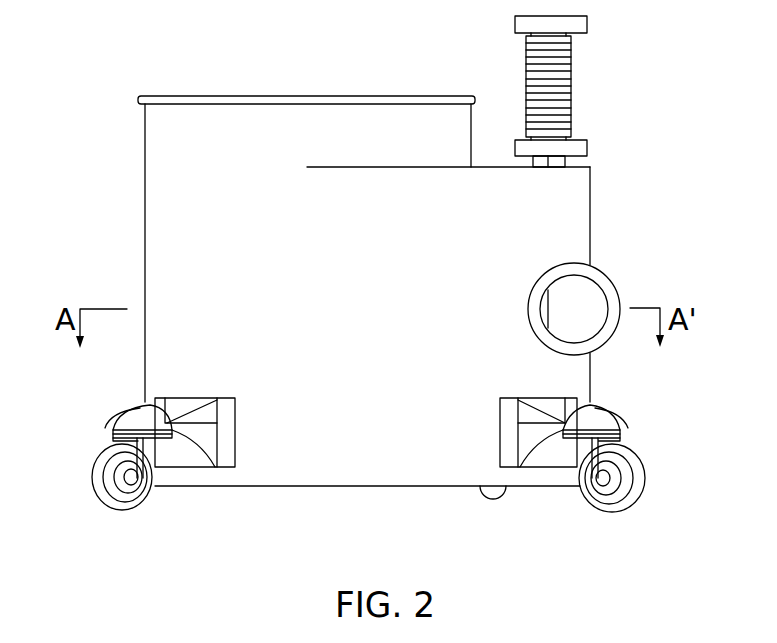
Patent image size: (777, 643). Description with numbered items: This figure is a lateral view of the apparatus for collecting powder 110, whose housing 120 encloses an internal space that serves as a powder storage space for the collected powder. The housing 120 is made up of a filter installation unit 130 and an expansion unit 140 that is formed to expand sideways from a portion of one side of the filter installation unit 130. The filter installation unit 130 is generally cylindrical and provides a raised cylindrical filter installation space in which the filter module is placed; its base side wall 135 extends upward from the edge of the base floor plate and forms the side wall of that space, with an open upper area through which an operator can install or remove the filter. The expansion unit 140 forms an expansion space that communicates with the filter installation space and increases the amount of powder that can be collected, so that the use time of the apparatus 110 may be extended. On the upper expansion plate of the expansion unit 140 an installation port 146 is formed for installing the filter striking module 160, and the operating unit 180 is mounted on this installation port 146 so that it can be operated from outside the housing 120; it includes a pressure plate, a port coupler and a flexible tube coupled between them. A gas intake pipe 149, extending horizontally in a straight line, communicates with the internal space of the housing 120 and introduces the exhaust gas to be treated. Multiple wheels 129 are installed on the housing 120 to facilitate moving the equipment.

The apparatus for collecting powder 110 is at (126, 122).
The housing 120 is at (144, 358).
The wheels 129 is at (97, 497).
The filter installation unit 130 is at (243, 97).
The base side wall 135 is at (371, 135).
The expansion unit 140 is at (591, 210).
The installation port 146 is at (587, 158).
The gas intake pipe 149 is at (612, 285).
The filter striking module 160 is at (598, 84).
The operating unit 180 is at (527, 73).